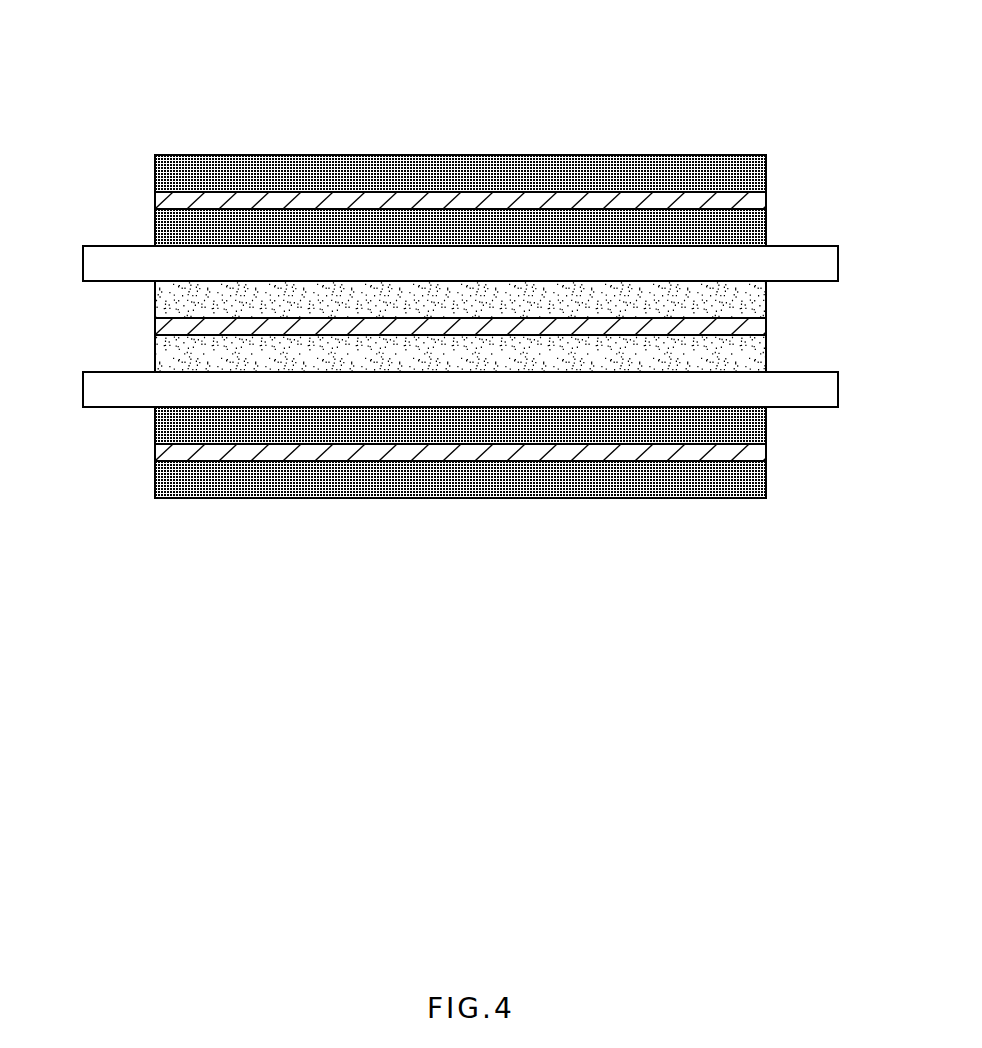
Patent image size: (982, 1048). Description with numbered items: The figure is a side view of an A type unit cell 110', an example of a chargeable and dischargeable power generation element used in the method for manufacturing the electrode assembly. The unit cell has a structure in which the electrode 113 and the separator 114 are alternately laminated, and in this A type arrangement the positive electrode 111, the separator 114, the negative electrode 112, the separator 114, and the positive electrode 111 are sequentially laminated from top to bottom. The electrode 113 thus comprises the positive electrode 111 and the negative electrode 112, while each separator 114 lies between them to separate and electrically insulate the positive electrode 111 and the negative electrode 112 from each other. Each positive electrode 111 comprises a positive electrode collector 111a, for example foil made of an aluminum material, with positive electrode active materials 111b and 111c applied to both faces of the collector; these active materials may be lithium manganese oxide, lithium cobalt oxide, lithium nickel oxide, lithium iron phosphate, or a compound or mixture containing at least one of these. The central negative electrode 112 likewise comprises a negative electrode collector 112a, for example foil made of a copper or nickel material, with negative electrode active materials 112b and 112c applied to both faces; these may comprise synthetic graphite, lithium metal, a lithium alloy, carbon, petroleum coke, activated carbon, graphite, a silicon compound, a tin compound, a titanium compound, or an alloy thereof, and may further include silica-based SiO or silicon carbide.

The A type unit cell 110' is at (464, 302).
The positive electrode 111 is at (537, 326).
The positive electrode collector 111a is at (767, 202).
The positive electrode active material 111b is at (767, 175).
The positive electrode active material 111c is at (767, 227).
The negative electrode 112 is at (537, 326).
The negative electrode collector 112a is at (767, 327).
The negative electrode active material 112b is at (767, 301).
The negative electrode active material 112c is at (767, 353).
The electrode 113 is at (537, 368).
The separator 114 is at (82, 263).